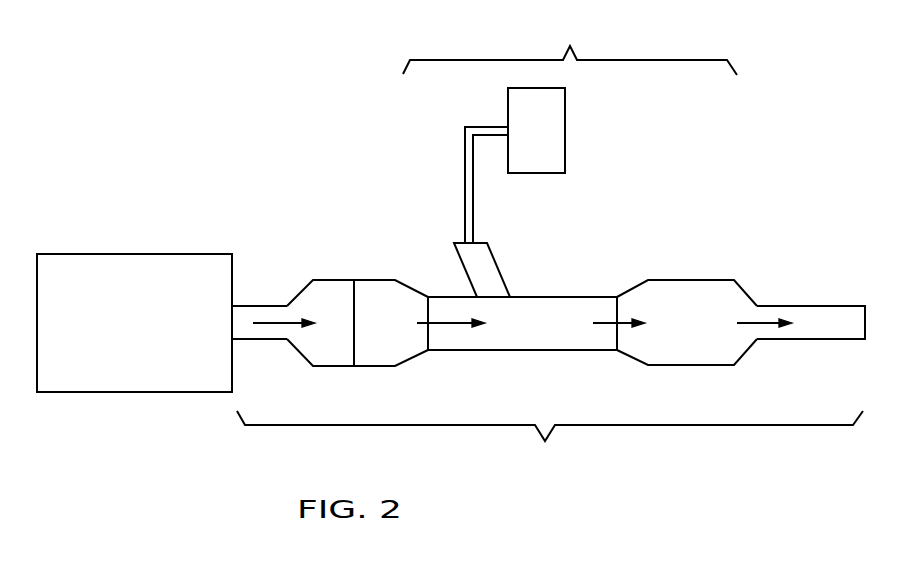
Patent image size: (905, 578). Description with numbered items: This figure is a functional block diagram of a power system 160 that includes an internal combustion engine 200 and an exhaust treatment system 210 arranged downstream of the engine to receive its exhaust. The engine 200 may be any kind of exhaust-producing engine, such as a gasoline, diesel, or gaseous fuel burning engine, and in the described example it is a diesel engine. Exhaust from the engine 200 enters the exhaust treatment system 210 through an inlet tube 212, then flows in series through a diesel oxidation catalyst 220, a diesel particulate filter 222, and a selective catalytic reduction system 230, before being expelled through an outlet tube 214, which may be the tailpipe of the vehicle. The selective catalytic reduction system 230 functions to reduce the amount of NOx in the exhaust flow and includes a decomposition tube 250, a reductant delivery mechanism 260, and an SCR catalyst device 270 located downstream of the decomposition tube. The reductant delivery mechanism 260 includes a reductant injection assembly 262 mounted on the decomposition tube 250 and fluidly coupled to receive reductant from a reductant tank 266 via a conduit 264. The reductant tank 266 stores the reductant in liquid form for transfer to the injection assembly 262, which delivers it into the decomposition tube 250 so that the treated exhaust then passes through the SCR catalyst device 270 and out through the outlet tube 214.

The power system 160 is at (237, 130).
The internal combustion engine 200 is at (136, 254).
The exhaust treatment system 210 is at (550, 442).
The inlet tube 212 is at (262, 306).
The outlet tube 214 is at (813, 306).
The diesel oxidation catalyst 220 is at (333, 280).
The diesel particulate filter 222 is at (373, 280).
The selective catalytic reduction system 230 is at (570, 45).
The decomposition tube 250 is at (593, 297).
The reductant delivery mechanism 260 is at (452, 178).
The reductant injection assembly 262 is at (500, 270).
The conduit 264 is at (474, 222).
The reductant tank 266 is at (565, 132).
The SCR catalyst device 270 is at (693, 280).